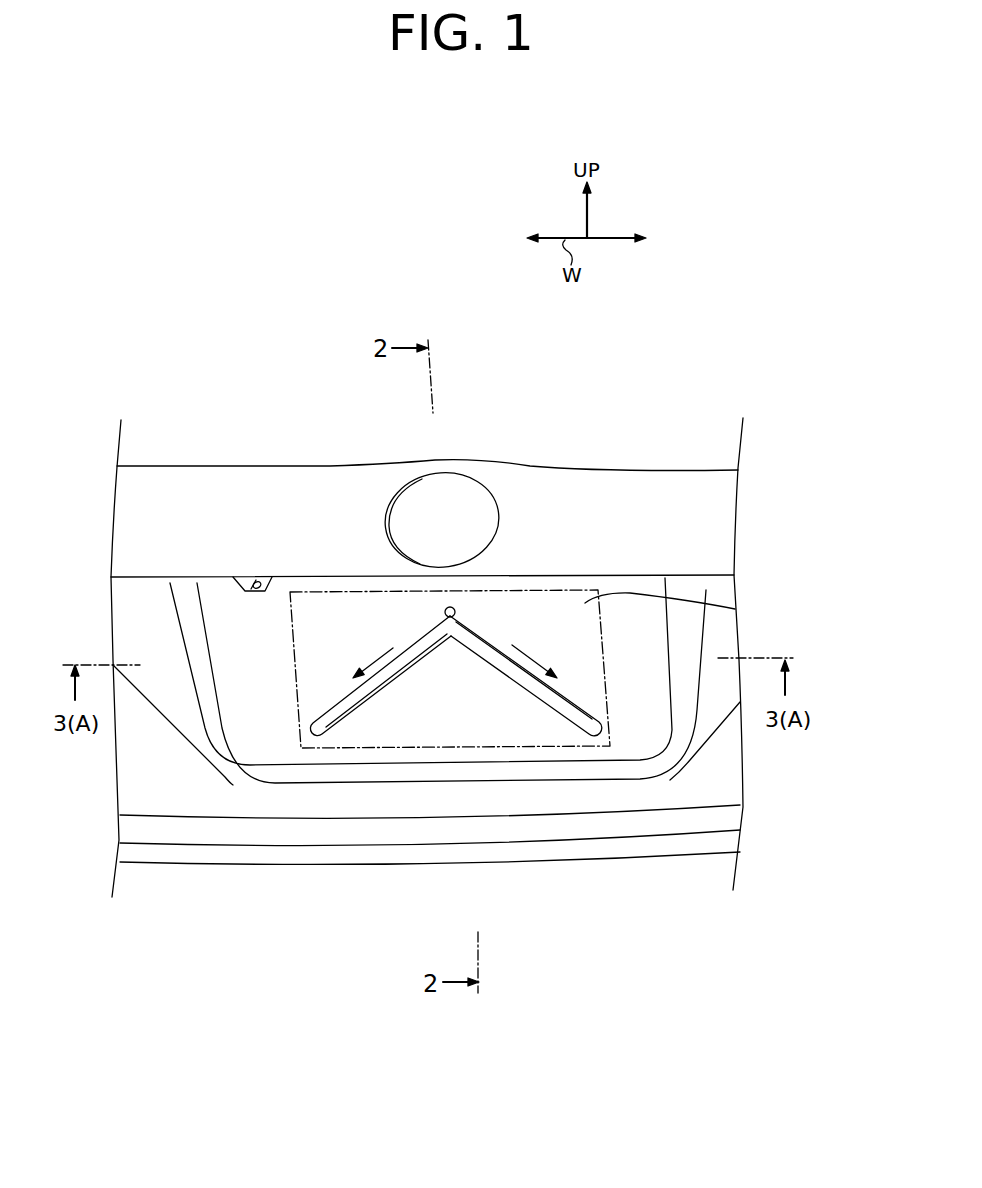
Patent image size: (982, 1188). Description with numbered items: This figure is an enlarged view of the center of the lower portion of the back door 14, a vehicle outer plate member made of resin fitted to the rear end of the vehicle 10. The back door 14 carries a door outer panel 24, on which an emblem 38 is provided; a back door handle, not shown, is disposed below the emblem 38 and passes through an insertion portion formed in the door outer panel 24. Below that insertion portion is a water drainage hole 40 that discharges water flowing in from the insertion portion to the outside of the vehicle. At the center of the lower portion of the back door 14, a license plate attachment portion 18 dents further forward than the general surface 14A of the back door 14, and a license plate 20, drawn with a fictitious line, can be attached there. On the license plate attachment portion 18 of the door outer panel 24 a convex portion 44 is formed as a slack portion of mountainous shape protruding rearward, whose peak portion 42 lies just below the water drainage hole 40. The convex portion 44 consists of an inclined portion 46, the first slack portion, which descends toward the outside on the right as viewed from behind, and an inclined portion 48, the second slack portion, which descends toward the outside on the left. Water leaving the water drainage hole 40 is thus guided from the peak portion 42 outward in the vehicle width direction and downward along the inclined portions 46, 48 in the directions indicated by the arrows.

The vehicle 10 is at (458, 636).
The back door 14 is at (753, 456).
The general surface 14A is at (712, 778).
The license plate attachment portion 18 is at (735, 608).
The license plate 20 is at (543, 736).
The door outer panel 24 is at (744, 524).
The emblem 38 is at (442, 495).
The water drainage hole 40 is at (455, 629).
The peak portion 42 is at (453, 625).
The convex portion 44 is at (524, 645).
The inclined portion 46 is at (525, 685).
The inclined portion 48 is at (382, 678).